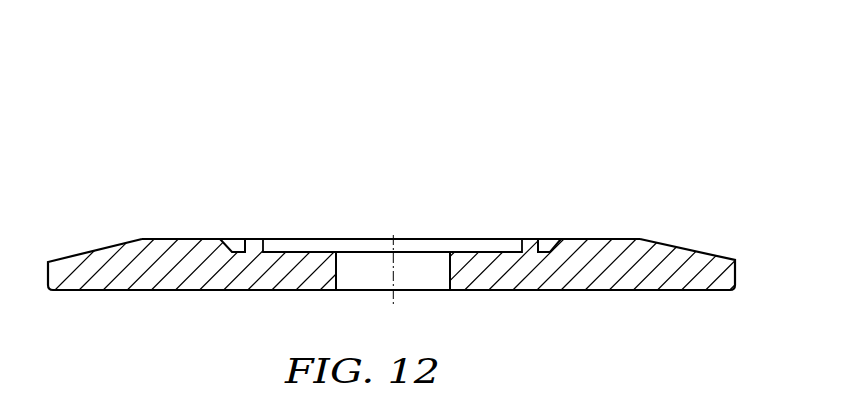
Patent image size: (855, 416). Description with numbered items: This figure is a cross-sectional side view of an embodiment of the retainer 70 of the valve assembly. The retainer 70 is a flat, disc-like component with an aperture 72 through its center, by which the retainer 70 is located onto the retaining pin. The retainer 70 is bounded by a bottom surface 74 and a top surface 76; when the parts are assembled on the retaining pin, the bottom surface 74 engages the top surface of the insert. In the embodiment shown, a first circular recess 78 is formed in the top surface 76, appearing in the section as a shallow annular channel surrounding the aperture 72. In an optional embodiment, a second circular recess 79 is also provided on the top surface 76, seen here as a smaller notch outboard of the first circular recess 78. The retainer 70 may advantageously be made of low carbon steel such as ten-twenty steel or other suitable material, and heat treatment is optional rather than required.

The retainer 70 is at (150, 125).
The aperture 72 is at (412, 273).
The bottom surface 74 is at (230, 290).
The top surface 76 is at (188, 237).
The first circular recess 78 is at (302, 252).
The second circular recess 79 is at (550, 237).